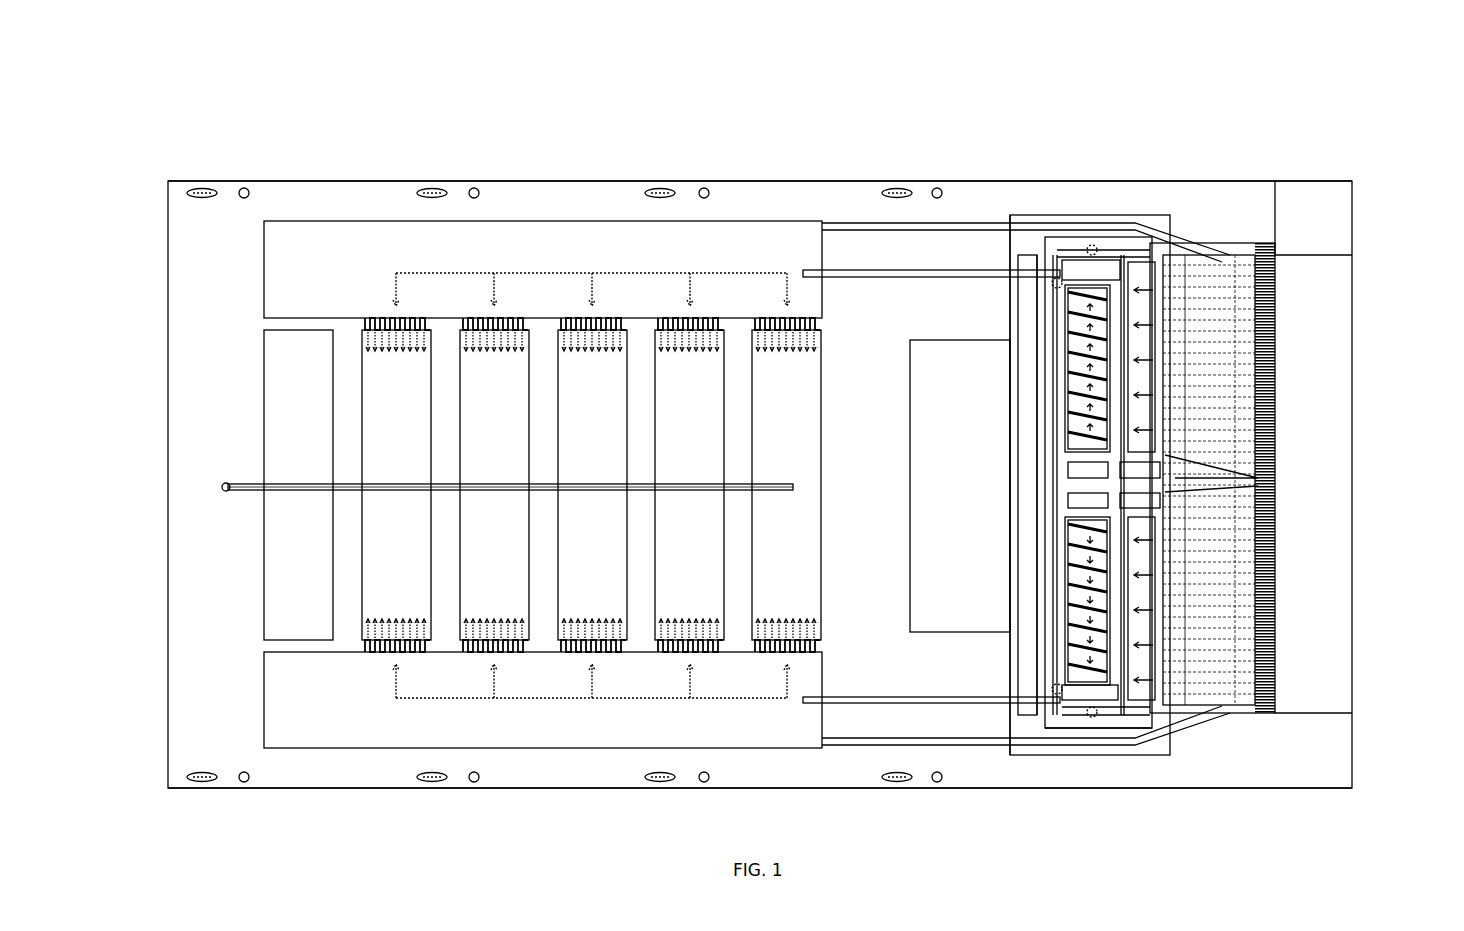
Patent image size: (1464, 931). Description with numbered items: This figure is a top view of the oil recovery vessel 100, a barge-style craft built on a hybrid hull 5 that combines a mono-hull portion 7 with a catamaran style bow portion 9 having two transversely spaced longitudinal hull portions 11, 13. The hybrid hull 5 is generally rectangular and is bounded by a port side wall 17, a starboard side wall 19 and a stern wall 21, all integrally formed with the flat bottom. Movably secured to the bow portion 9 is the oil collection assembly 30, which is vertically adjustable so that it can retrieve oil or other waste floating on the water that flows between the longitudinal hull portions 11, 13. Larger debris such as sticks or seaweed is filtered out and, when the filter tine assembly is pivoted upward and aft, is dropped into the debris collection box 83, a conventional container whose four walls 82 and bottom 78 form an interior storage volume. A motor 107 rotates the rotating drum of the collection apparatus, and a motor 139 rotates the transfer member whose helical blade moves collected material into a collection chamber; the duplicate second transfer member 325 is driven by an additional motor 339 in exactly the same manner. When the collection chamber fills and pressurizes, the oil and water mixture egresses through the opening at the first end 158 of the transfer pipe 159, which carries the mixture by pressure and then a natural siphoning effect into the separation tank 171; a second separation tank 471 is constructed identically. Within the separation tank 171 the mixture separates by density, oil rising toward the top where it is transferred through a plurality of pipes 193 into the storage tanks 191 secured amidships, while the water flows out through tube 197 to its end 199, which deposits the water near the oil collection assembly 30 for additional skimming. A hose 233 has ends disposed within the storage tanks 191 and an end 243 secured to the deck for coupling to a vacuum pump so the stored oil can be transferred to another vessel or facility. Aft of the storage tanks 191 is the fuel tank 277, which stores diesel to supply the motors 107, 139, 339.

The oil recovery vessel 100 is at (1305, 102).
The hybrid hull 5 is at (266, 828).
The mono-hull portion 7 is at (628, 827).
The catamaran style bow portion 9 is at (1363, 818).
The longitudinal hull portion 11 is at (1340, 190).
The longitudinal hull portion 13 is at (1340, 735).
The port side wall 17 is at (620, 185).
The starboard side wall 19 is at (312, 790).
The stern wall 21 is at (168, 303).
The oil collection assembly 30 is at (1385, 357).
The bottom 78 is at (1028, 330).
The walls 82 is at (1040, 375).
The debris collection box 83 is at (1022, 300).
The motor 107 is at (1140, 515).
The motor 139 is at (1087, 506).
The first end 158 is at (1037, 385).
The transfer pipe 159 is at (893, 270).
The separation tank 171 is at (745, 243).
The storage tanks 191 is at (786, 393).
The pipes 193 is at (360, 630).
The tube 197 is at (1100, 757).
The end 199 is at (1232, 725).
The hose 233 is at (638, 470).
The end 243 is at (224, 486).
The fuel tank 277 is at (280, 570).
The second transfer member 325 is at (1100, 290).
The motor 339 is at (1075, 478).
The second separation tank 471 is at (738, 725).